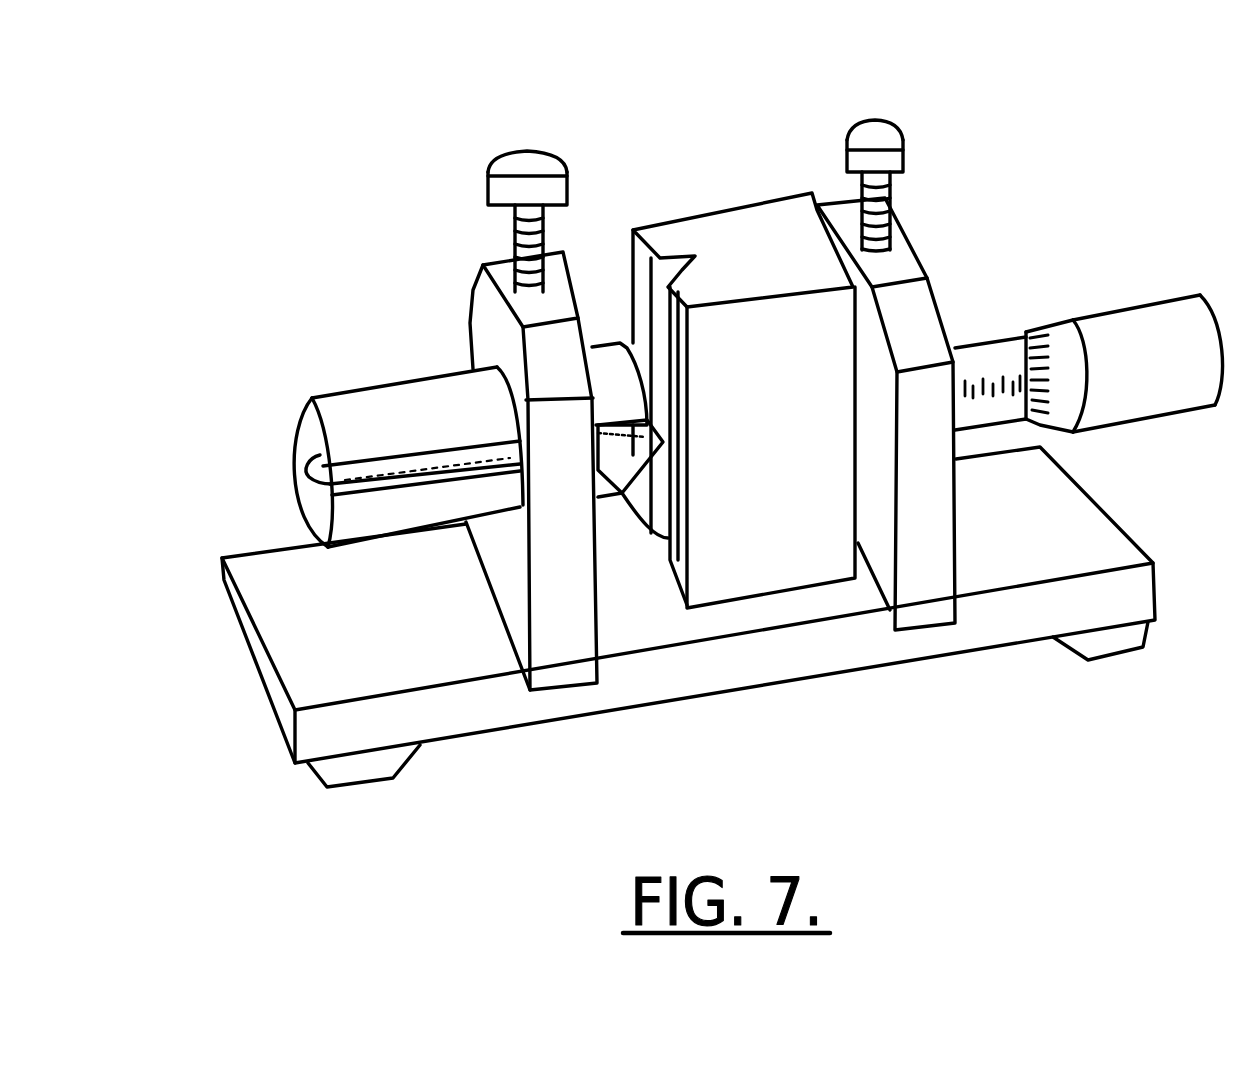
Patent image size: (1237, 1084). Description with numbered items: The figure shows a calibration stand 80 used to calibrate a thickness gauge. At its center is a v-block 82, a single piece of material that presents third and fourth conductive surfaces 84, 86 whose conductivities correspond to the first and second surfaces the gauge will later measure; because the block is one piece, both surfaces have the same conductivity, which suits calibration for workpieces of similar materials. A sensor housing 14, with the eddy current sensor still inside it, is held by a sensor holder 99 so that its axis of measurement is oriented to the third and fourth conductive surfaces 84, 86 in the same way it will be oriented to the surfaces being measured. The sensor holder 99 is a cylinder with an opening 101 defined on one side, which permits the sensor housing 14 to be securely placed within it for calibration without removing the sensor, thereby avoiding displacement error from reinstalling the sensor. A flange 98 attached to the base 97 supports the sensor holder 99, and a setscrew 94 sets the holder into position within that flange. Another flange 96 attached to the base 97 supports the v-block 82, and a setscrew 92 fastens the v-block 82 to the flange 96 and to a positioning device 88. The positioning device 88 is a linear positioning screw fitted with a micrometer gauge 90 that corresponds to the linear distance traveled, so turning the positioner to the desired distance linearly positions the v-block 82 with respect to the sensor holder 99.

The calibration stand 80 is at (1094, 150).
The v-block 82 is at (726, 372).
The third conductive surface 84 is at (671, 256).
The fourth conductive surface 86 is at (682, 258).
The positioning device 88 is at (1095, 335).
The micrometer gauge 90 is at (1055, 343).
The setscrew 92 is at (878, 140).
The setscrew 94 is at (530, 160).
The flange 96 is at (936, 598).
The base 97 is at (1102, 540).
The flange 98 is at (563, 650).
The sensor holder 99 is at (420, 429).
The opening 101 is at (300, 490).
The sensor housing 14 is at (633, 455).